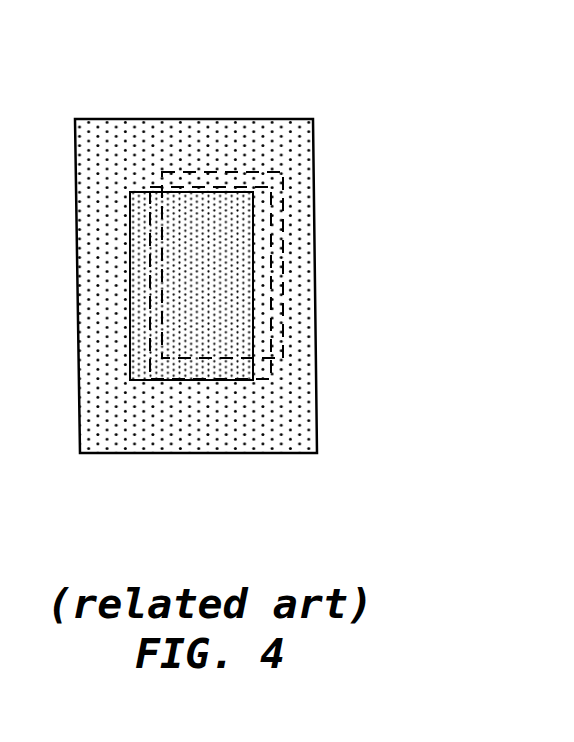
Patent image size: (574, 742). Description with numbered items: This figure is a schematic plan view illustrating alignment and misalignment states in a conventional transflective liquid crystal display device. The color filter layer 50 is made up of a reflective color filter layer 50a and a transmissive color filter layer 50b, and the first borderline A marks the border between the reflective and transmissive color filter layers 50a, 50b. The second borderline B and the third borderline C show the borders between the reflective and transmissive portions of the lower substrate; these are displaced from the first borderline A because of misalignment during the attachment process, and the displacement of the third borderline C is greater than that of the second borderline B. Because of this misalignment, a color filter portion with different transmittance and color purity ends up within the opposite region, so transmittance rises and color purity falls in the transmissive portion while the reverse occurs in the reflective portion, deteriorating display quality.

The color filter layer 50 is at (261, 286).
The reflective color filter layer 50a is at (298, 234).
The transmissive color filter layer 50b is at (243, 323).
The first borderline A is at (131, 191).
The second borderline B is at (276, 187).
The third borderline C is at (159, 186).